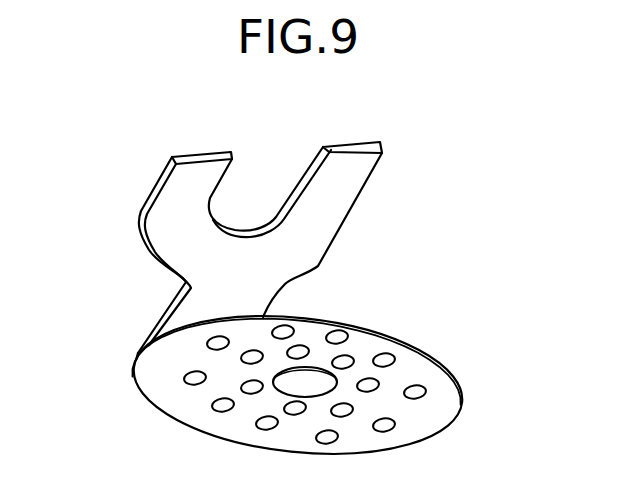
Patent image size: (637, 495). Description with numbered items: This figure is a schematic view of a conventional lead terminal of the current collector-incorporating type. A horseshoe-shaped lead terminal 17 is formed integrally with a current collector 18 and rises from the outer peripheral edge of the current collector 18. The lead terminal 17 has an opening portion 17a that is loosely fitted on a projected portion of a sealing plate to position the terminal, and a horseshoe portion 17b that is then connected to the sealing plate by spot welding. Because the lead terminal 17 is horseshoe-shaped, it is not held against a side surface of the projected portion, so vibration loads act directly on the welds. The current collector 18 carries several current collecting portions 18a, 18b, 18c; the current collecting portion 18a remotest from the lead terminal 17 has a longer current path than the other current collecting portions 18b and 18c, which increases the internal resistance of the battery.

The lead terminal 17 is at (309, 247).
The opening portion 17a is at (262, 191).
The horseshoe portion 17b is at (356, 160).
The current collector 18 is at (296, 383).
The current collecting portion 18a is at (395, 421).
The current collecting portion 18b is at (346, 334).
The current collecting portion 18c is at (146, 346).